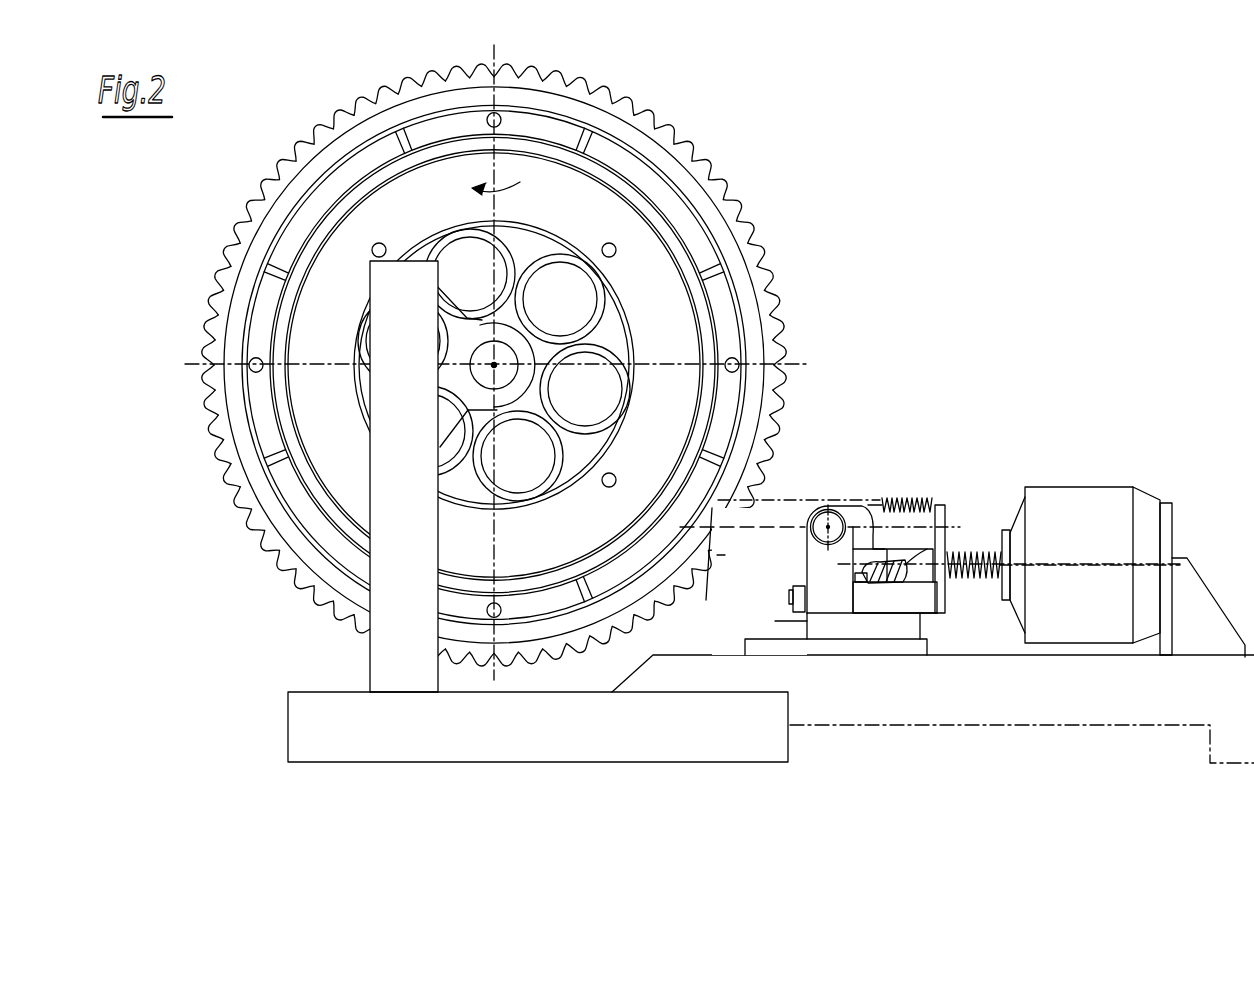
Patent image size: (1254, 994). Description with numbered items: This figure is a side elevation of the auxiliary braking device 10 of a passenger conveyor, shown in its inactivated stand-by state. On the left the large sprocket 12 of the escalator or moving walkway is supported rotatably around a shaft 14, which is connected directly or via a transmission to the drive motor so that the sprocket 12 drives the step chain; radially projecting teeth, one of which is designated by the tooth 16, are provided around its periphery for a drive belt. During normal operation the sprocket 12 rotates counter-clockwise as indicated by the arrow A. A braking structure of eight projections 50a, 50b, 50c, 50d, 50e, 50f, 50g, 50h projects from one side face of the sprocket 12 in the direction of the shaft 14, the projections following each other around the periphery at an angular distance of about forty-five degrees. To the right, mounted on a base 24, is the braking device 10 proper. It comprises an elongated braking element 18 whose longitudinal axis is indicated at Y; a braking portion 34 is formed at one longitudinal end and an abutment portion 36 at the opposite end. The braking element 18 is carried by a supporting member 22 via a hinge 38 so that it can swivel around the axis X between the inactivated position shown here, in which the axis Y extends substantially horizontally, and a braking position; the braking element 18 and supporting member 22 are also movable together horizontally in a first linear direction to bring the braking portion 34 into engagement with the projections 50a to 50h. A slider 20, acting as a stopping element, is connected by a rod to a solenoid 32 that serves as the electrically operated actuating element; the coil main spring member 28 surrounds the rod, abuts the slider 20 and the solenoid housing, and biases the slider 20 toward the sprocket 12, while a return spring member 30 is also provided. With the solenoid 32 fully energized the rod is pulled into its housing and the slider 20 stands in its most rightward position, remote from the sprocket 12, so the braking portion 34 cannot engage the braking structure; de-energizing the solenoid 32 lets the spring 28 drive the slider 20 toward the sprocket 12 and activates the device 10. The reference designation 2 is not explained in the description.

The drive motor shaft 2 is at (1113, 570).
The auxiliary braking device 10 is at (1067, 325).
The sprocket 12 is at (642, 147).
The shaft 14 is at (716, 237).
The radially projecting tooth 16 is at (752, 305).
The braking element 18 is at (783, 518).
The slider 20 is at (955, 582).
The supporting member 22 is at (898, 603).
The base 24 is at (846, 630).
The main spring member 28 is at (975, 550).
The return spring member 30 is at (917, 503).
The solenoid 32 is at (1118, 497).
The braking portion 34 is at (706, 600).
The abutment portion 36 is at (872, 540).
The hinge 38 is at (827, 513).
The projection 50a is at (740, 400).
The projection 50b is at (580, 607).
The projection 50c is at (404, 589).
The projection 50d is at (268, 462).
The projection 50e is at (287, 268).
The projection 50f is at (410, 137).
The projection 50g is at (597, 137).
The projection 50h is at (495, 365).
The arrow A is at (505, 172).
The swivel axis X is at (820, 521).
The longitudinal axis Y is at (770, 430).